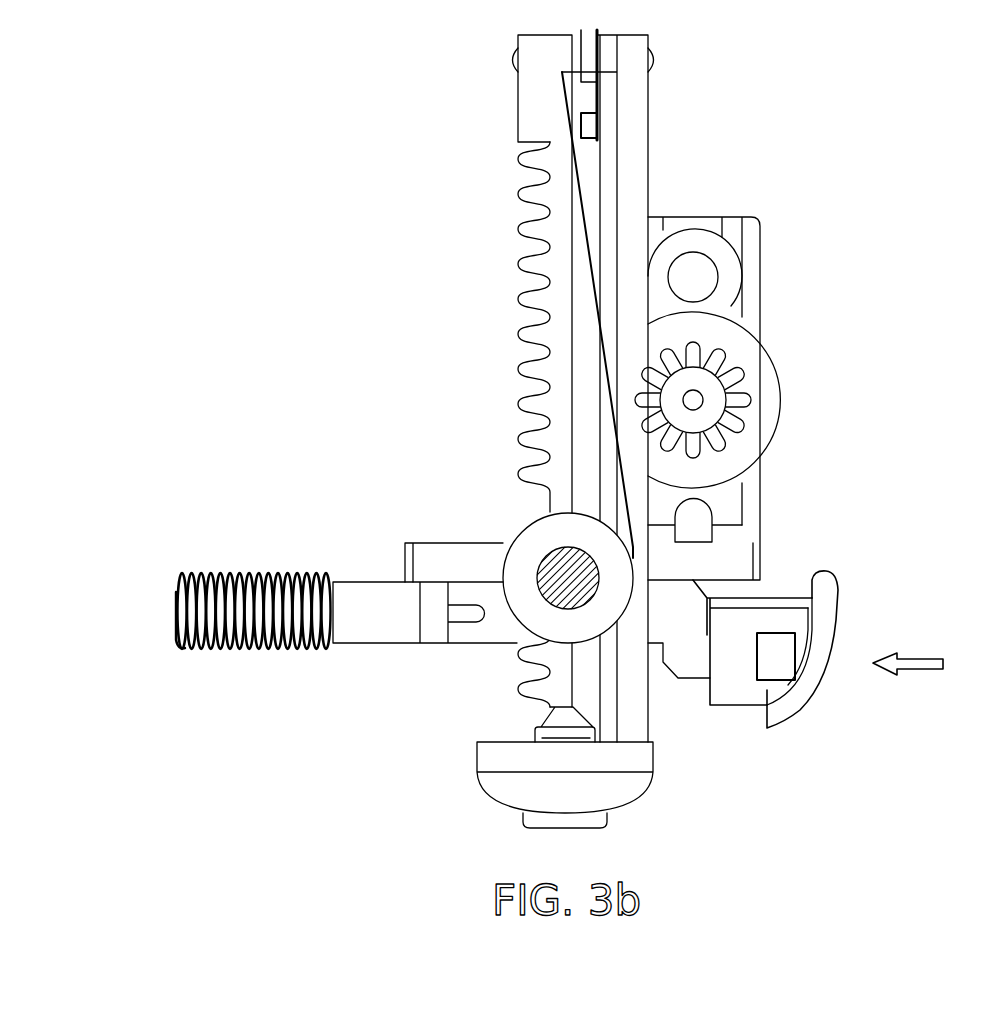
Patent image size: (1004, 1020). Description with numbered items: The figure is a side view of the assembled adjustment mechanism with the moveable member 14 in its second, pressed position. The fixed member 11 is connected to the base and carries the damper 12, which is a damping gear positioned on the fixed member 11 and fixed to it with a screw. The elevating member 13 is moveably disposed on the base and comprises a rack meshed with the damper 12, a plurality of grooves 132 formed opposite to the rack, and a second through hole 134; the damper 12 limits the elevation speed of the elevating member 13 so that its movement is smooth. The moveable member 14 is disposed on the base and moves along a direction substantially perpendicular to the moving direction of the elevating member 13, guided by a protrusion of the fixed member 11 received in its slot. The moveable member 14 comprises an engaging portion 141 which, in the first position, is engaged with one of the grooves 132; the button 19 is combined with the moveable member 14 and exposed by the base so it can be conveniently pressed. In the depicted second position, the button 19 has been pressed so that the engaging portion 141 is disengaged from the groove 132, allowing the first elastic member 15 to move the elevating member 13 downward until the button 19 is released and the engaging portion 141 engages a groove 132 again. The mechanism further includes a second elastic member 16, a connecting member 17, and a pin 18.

The fixed member 11 is at (762, 275).
The damper 12 is at (750, 410).
The elevating member 13 is at (652, 163).
The grooves 132 is at (517, 342).
The second through hole 134 is at (597, 118).
The moveable member 14 is at (700, 585).
The engaging portion 141 is at (433, 620).
The first elastic member 15 is at (518, 533).
The second elastic member 16 is at (249, 573).
The connecting member 17 is at (590, 53).
The pin 18 is at (655, 62).
The button 19 is at (838, 600).